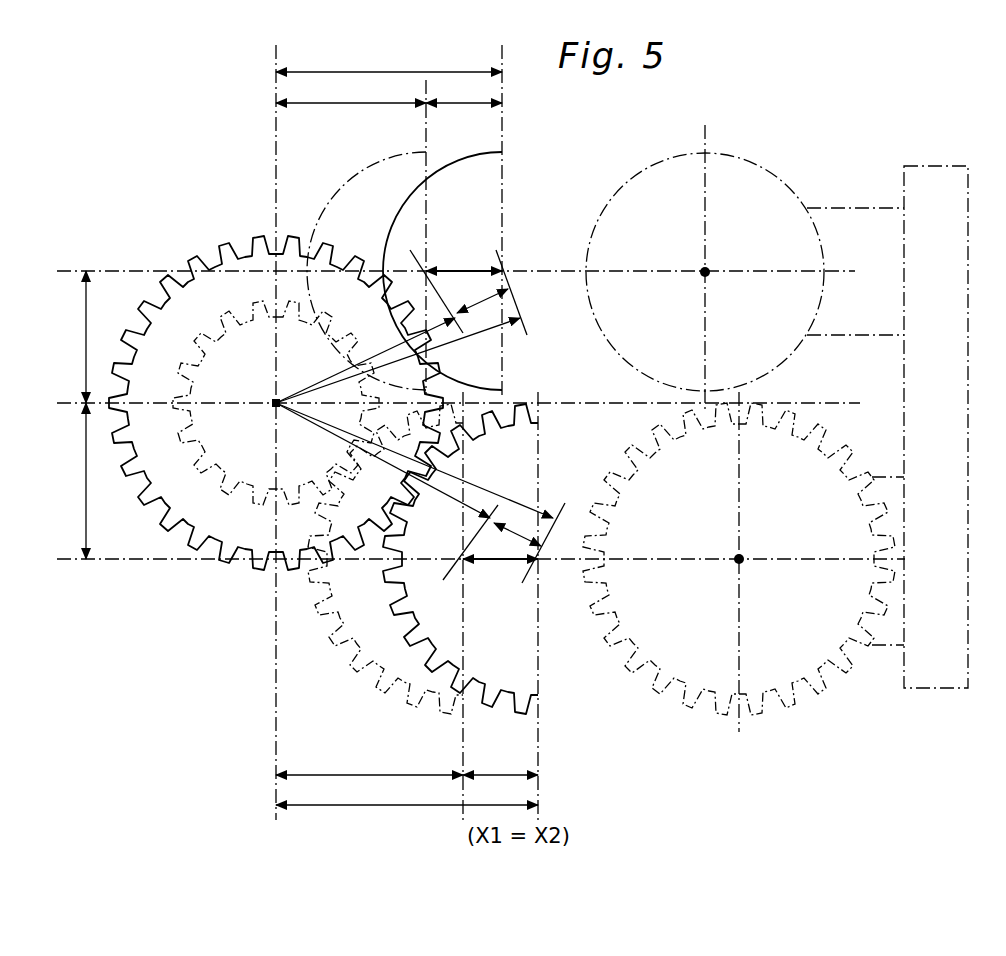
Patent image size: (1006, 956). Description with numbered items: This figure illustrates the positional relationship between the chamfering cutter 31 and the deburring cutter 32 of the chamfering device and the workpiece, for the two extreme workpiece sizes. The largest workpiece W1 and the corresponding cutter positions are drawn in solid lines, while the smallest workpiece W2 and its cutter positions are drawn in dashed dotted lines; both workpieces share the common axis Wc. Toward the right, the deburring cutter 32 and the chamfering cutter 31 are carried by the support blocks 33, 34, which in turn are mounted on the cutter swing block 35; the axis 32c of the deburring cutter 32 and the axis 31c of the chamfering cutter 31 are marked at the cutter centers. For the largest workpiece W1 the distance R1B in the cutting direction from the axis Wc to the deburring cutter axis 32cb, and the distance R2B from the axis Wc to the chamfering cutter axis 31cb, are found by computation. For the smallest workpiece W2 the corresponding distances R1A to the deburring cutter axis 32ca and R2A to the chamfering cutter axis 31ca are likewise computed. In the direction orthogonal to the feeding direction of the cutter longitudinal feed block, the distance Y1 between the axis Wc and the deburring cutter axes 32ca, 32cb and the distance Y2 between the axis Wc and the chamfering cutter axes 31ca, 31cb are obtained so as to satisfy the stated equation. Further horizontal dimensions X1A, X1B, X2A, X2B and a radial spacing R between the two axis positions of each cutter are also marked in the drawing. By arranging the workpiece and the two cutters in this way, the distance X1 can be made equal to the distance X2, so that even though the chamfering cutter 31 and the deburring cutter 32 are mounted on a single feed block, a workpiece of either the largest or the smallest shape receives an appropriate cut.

The workpiece W1 is at (217, 243).
The workpiece W2 is at (252, 513).
The axis of the workpiece Wc is at (273, 407).
The chamfering cutter 31 is at (317, 657).
The center of first gear 31c is at (739, 560).
The axis of the chamfering cutter 31ca is at (465, 565).
The axis of the chamfering cutter 31cb is at (540, 563).
The deburring cutter 32 is at (343, 183).
The center of second gear 32c is at (705, 272).
The axis of the deburring cutter 32ca is at (430, 264).
The axis of the deburring cutter 32cb is at (503, 264).
The support block 33 is at (887, 638).
The support block 34 is at (866, 220).
The cutter swing block 35 is at (932, 172).
The distance X1 is at (464, 90).
The horizontal distance X1A is at (351, 90).
The horizontal distance X1B is at (389, 59).
The distance X2 is at (500, 762).
The horizontal distance X2A is at (369, 762).
The horizontal distance X2B is at (407, 791).
The distance Y1 is at (71, 337).
The distance Y2 is at (71, 481).
The offset distance R is at (483, 415).
The distance in the cutting direction R1A is at (365, 350).
The distance in the cutting direction R1B is at (398, 360).
The distance in the cutting direction R2A is at (383, 463).
The distance in the cutting direction R2B is at (414, 460).